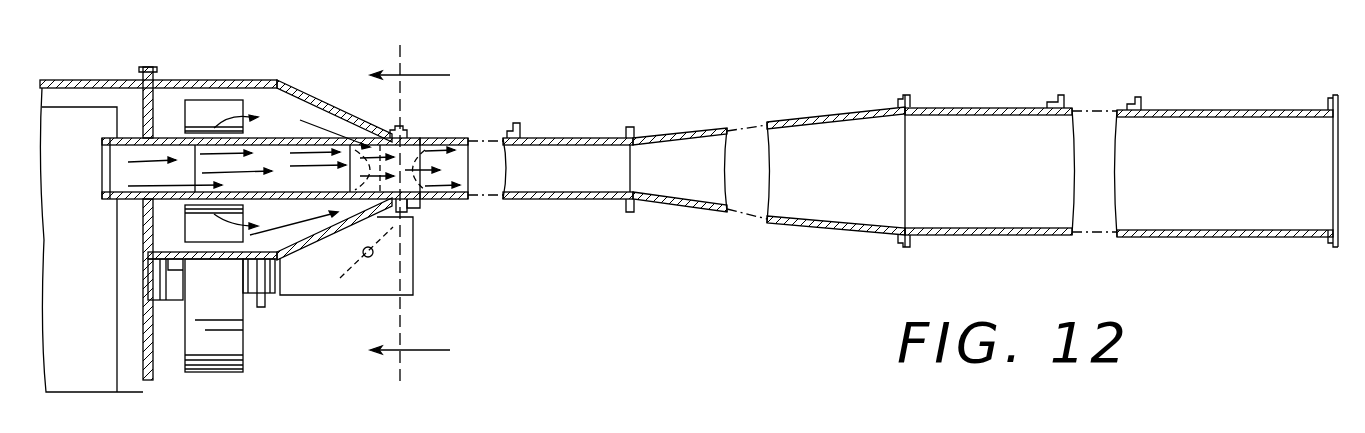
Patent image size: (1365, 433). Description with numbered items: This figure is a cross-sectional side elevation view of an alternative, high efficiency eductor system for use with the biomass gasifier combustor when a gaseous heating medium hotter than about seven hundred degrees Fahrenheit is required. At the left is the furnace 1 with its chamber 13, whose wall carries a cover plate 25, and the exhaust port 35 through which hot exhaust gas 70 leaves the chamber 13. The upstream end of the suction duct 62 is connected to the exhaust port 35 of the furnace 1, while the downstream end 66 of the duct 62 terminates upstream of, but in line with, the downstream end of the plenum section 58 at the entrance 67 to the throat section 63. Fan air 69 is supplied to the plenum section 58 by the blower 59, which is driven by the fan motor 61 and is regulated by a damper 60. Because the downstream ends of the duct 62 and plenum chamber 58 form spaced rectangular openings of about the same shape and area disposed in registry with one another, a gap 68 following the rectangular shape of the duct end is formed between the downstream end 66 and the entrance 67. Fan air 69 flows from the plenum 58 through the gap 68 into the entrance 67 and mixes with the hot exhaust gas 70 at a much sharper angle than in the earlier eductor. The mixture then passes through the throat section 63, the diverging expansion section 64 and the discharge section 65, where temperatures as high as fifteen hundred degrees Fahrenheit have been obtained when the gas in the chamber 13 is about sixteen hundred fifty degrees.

The furnace 1 is at (100, 398).
The chamber 13 is at (92, 330).
The cover plate 25 is at (118, 80).
The exhaust port 35 is at (103, 184).
The plenum section 58 is at (297, 108).
The blower 59 is at (213, 372).
The damper 60 is at (413, 259).
The fan motor 61 is at (154, 300).
The suction duct 62 is at (323, 140).
The throat section 63 is at (580, 200).
The diverging expansion section 64 is at (833, 226).
The discharge section 65 is at (1000, 108).
The downstream end of the suction duct 66 is at (452, 141).
The entrance to the throat section 67 is at (420, 204).
The gap 68 is at (396, 127).
The fan air 69 is at (278, 118).
The hot exhaust gas 70 is at (155, 160).